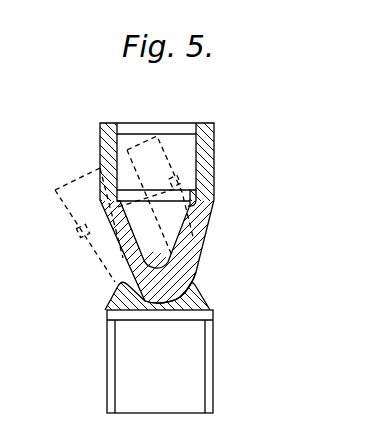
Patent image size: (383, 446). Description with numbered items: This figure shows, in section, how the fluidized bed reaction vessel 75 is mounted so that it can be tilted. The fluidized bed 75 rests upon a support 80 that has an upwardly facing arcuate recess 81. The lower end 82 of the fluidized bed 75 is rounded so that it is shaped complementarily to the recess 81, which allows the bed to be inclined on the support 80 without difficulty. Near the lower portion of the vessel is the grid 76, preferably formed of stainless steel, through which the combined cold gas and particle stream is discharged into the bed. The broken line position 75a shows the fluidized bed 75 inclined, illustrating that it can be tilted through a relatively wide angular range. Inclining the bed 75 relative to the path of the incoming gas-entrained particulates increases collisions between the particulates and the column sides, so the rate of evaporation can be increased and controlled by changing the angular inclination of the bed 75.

The fluidized bed reaction vessel 75 is at (216, 142).
The broken line position of fluidized bed 75a is at (66, 214).
The grid 76 is at (198, 209).
The support 80 is at (107, 360).
The arcuate recess 81 is at (197, 275).
The lower end 82 is at (147, 300).